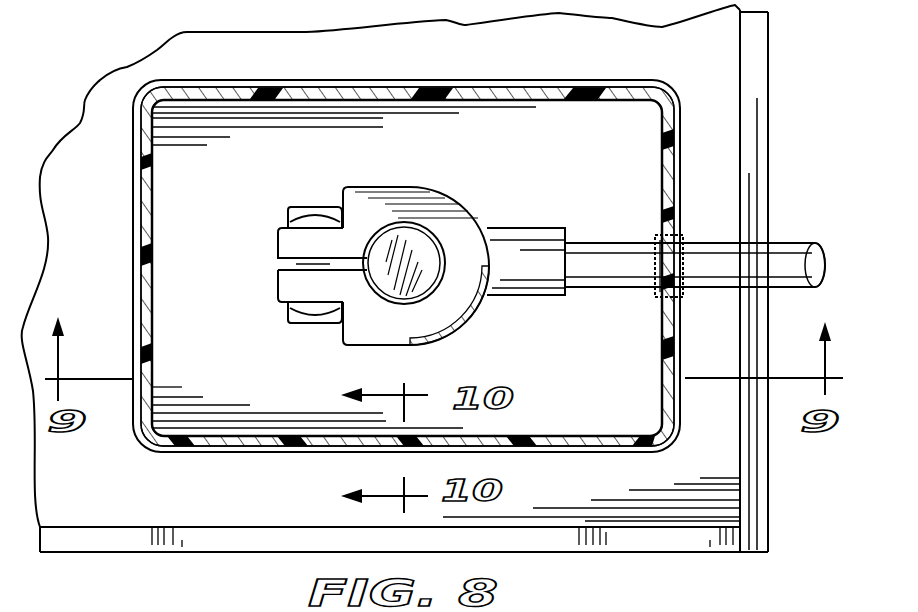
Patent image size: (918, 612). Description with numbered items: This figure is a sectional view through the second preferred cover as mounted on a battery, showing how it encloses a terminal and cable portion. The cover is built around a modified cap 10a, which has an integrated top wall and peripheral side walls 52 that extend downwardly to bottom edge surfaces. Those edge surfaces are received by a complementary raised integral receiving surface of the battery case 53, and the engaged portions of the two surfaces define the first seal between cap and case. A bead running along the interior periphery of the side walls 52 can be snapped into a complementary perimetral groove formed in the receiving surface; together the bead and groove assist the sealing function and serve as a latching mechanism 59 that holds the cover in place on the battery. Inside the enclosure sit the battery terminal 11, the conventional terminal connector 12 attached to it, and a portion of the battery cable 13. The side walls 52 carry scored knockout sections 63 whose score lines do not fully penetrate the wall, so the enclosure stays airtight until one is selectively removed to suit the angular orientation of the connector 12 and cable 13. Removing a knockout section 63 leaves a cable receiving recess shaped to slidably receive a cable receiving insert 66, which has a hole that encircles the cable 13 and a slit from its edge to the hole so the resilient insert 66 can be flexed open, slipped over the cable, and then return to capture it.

The modified cap 10a is at (190, 448).
The battery terminal 11 is at (397, 242).
The terminal connector 12 is at (508, 245).
The battery cable 13 is at (795, 251).
The peripheral side walls 52 is at (670, 108).
The battery case 53 is at (227, 502).
The latching mechanism 59 is at (369, 459).
The knockout section 63 is at (546, 90).
The cable receiving insert 66 is at (680, 207).